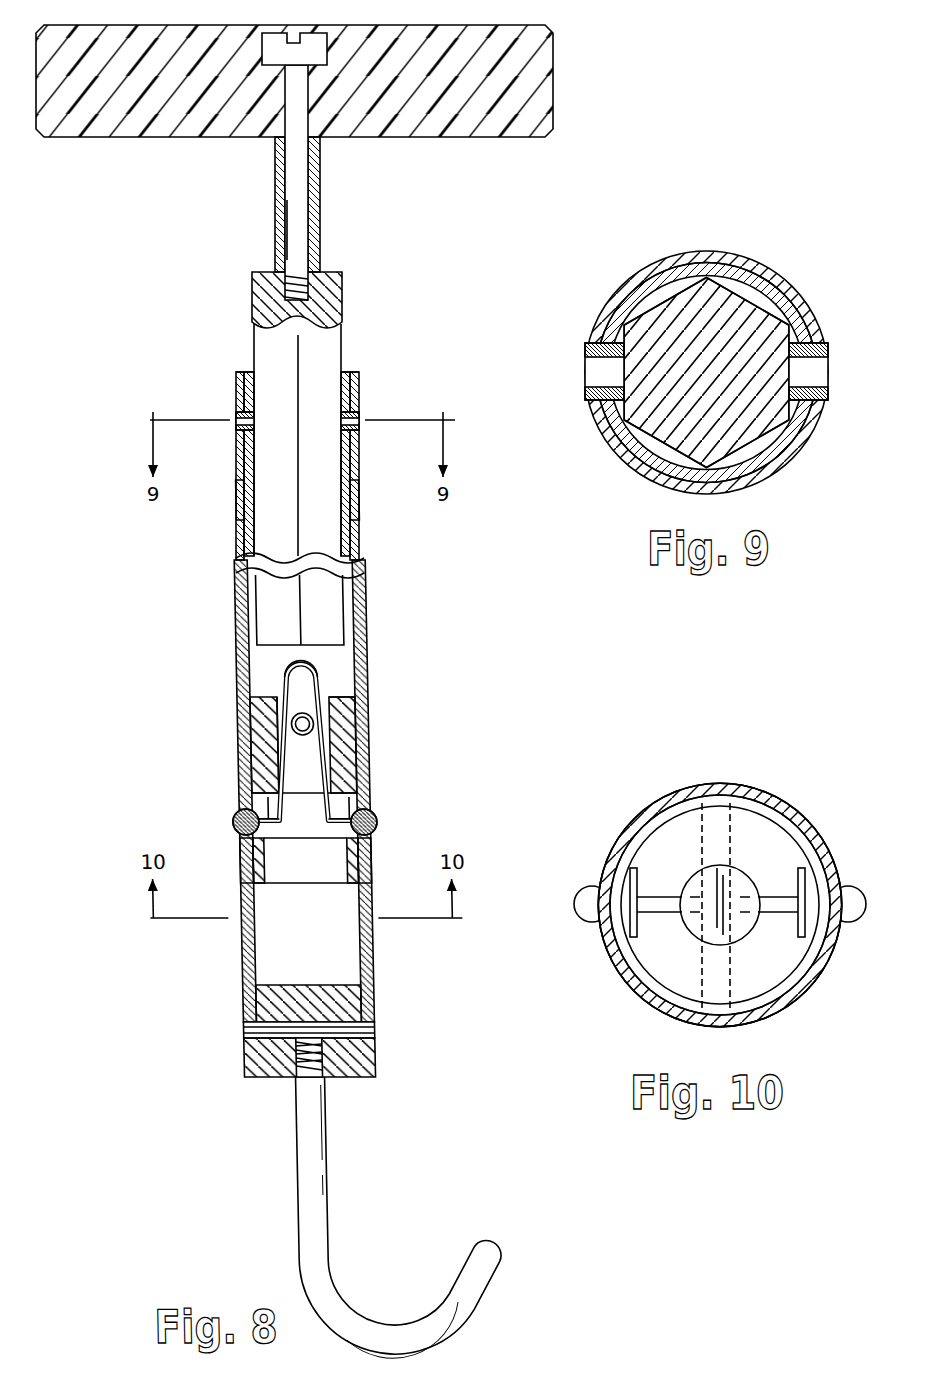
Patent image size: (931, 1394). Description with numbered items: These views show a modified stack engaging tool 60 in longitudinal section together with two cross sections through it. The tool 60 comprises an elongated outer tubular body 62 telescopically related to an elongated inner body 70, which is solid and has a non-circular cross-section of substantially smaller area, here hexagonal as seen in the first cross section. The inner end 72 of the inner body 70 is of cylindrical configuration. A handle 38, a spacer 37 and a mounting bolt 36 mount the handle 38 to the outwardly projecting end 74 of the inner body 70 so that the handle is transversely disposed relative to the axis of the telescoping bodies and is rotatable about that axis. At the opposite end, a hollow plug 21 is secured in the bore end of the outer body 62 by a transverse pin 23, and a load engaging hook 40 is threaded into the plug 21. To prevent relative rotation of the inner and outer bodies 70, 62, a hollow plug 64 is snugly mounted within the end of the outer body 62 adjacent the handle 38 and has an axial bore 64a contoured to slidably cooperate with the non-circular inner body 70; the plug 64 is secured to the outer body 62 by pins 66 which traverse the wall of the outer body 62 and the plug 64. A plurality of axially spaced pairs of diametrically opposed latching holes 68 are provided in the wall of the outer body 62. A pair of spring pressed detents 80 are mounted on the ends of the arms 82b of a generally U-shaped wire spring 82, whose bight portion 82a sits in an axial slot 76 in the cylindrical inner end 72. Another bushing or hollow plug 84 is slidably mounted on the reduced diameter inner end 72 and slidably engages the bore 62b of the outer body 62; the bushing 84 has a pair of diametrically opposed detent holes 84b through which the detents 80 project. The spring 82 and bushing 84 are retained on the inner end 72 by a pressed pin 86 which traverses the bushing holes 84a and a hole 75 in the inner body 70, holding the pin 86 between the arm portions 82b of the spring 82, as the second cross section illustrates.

In FIG. 8, the hollow plug 21 is at (268, 1078).
In FIG. 8, the transverse pin 23 is at (233, 1035).
In FIG. 8, the mounting bolt 36 is at (298, 202).
In FIG. 8, the spacer 37 is at (277, 227).
In FIG. 8, the handle 38 is at (541, 66).
In FIG. 8, the load engaging hook 40 is at (312, 1150).
In FIG. 8, the stack engaging tool 60 is at (176, 589).
In FIG. 9, the stack engaging tool 60 is at (687, 250).
In FIG. 10, the stack engaging tool 60 is at (748, 764).
In FIG. 8, the outer tubular body 62 is at (363, 578).
In FIG. 10, the outer tubular body 62 is at (681, 792).
In FIG. 8, the bore of outer body 62b is at (350, 628).
In FIG. 10, the bore of outer body 62b is at (632, 833).
In FIG. 8, the hollow plug 64 is at (346, 375).
In FIG. 9, the hollow plug 64 is at (760, 453).
In FIG. 9, the axial bore 64a is at (628, 460).
In FIG. 8, the pins 66 is at (233, 418).
In FIG. 9, the pins 66 is at (588, 353).
In FIG. 8, the latching holes 68 is at (240, 493).
In FIG. 8, the inner body 70 is at (297, 440).
In FIG. 9, the inner body 70 is at (782, 363).
In FIG. 8, the inner end 72 is at (348, 703).
In FIG. 8, the outwardly projecting end 74 is at (343, 310).
In FIG. 10, the hole 75 is at (718, 1027).
In FIG. 8, the axial slot 76 is at (291, 692).
In FIG. 10, the axial slot 76 is at (758, 908).
In FIG. 8, the spring pressed detents 80 is at (369, 813).
In FIG. 10, the spring pressed detents 80 is at (583, 920).
In FIG. 8, the wire spring 82 is at (276, 800).
In FIG. 10, the wire spring 82 is at (653, 896).
In FIG. 8, the bight portion 82a is at (306, 661).
In FIG. 8, the arms 82b is at (332, 823).
In FIG. 8, the bushing 84 is at (349, 723).
In FIG. 10, the bushing 84 is at (657, 980).
In FIG. 8, the bushing holes 84a is at (290, 733).
In FIG. 8, the detent holes 84b is at (340, 848).
In FIG. 8, the pressed pin 86 is at (300, 737).
In FIG. 10, the pressed pin 86 is at (730, 840).